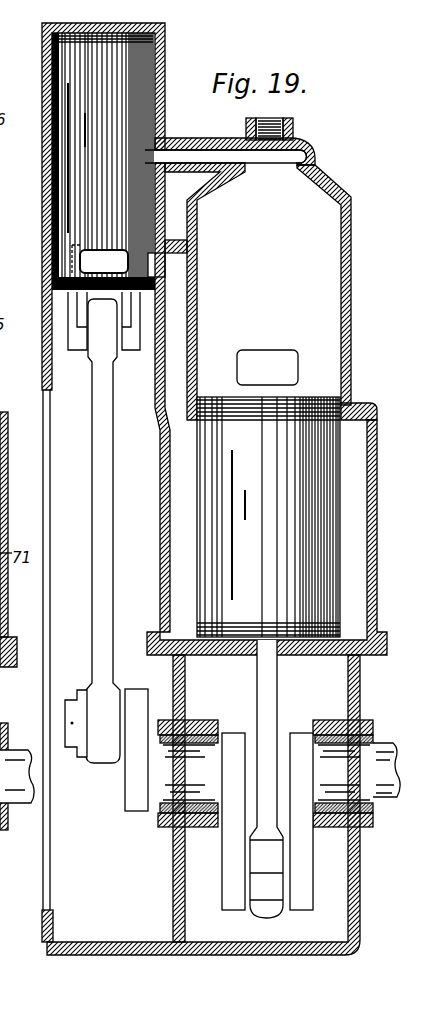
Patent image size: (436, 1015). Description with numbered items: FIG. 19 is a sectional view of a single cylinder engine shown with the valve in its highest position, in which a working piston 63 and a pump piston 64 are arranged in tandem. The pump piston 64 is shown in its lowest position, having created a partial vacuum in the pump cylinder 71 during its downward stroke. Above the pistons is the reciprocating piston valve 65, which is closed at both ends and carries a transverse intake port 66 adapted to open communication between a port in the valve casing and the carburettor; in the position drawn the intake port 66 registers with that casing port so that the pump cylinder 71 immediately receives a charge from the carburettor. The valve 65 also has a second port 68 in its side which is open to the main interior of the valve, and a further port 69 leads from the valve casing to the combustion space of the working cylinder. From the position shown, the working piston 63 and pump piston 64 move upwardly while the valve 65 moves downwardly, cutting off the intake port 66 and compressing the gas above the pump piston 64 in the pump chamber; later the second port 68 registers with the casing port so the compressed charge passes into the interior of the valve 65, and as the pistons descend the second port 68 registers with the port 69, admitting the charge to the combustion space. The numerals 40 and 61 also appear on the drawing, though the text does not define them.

The casing 40 is at (287, 190).
The partition wall 61 is at (168, 258).
The working piston 63 is at (343, 412).
The pump piston 64 is at (240, 627).
The reciprocating piston valve 65 is at (70, 150).
The transverse intake port 66 is at (102, 261).
The second port 68 is at (166, 140).
The port 69 is at (190, 152).
The pump cylinder 71 is at (355, 520).